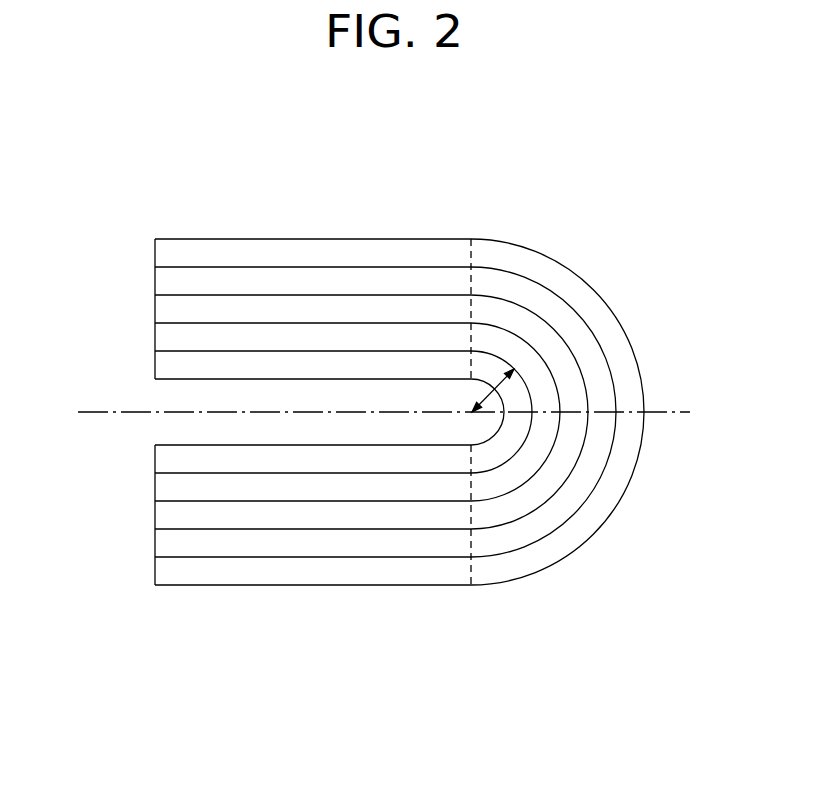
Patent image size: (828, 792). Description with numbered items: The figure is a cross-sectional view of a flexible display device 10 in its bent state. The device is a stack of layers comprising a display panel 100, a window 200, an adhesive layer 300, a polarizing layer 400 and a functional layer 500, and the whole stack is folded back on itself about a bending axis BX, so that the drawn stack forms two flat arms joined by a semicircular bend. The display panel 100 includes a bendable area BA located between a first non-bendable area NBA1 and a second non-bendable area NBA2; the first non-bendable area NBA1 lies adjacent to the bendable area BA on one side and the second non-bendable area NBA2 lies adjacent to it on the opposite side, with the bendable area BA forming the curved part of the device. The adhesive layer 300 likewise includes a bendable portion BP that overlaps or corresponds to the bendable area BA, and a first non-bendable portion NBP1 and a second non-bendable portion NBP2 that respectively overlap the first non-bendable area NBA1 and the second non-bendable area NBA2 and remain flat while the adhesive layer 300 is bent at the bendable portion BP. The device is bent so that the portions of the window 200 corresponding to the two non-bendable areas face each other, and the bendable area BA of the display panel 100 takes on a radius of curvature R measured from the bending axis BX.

The flexible display device 10 is at (624, 208).
The display panel 100 is at (157, 543).
The window 200 is at (157, 459).
The adhesive layer 300 is at (157, 487).
The polarizing layer 400 is at (157, 515).
The functional layer 500 is at (157, 571).
The bendable area BA is at (518, 293).
The bendable portion BP is at (518, 349).
The bending axis BX is at (400, 412).
The radius of curvature R is at (484, 390).
The first non-bendable area NBA1 is at (253, 548).
The second non-bendable area NBA2 is at (254, 277).
The first non-bendable portion NBP1 is at (367, 492).
The second non-bendable portion NBP2 is at (367, 332).